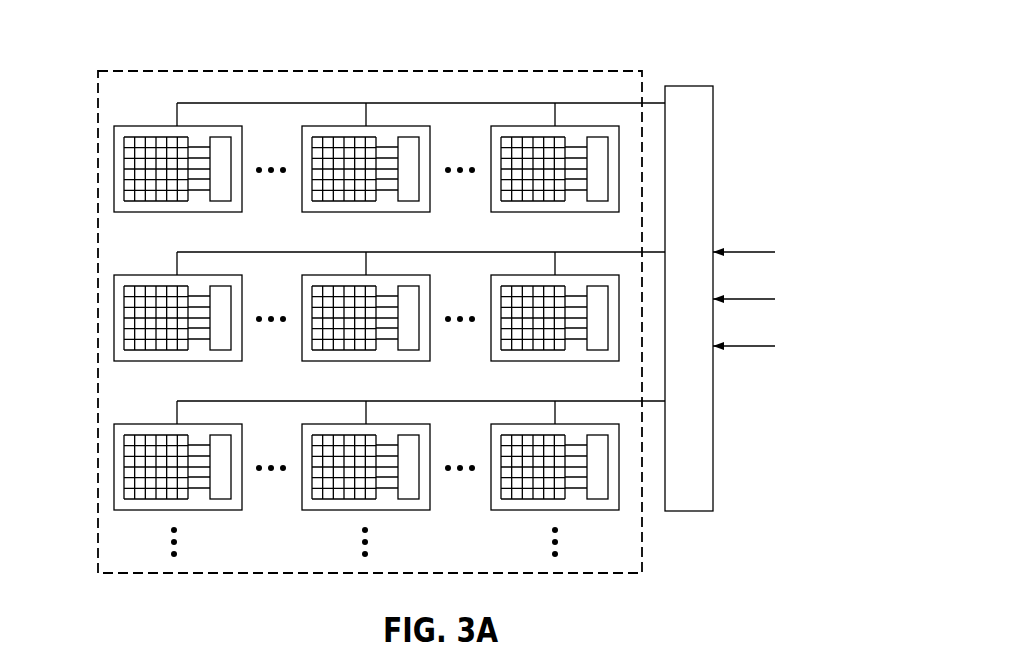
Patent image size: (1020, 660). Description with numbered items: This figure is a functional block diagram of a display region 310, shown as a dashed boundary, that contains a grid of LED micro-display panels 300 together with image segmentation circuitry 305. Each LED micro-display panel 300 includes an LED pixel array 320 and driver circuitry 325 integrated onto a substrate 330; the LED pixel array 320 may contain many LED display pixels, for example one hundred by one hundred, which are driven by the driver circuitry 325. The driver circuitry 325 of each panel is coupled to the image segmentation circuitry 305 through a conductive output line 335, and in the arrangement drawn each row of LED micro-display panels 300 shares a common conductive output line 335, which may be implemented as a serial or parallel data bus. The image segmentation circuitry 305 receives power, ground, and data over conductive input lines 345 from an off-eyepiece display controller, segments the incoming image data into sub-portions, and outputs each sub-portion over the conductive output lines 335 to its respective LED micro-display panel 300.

The LED micro-display panel 300 is at (331, 290).
The image segmentation circuitry 305 is at (702, 307).
The display region 310 is at (585, 71).
The LED pixel array 320 is at (124, 154).
The driver circuitry 325 is at (220, 138).
The substrate 330 is at (123, 205).
The conductive output line 335 is at (315, 103).
The conductive input lines 345 is at (788, 233).